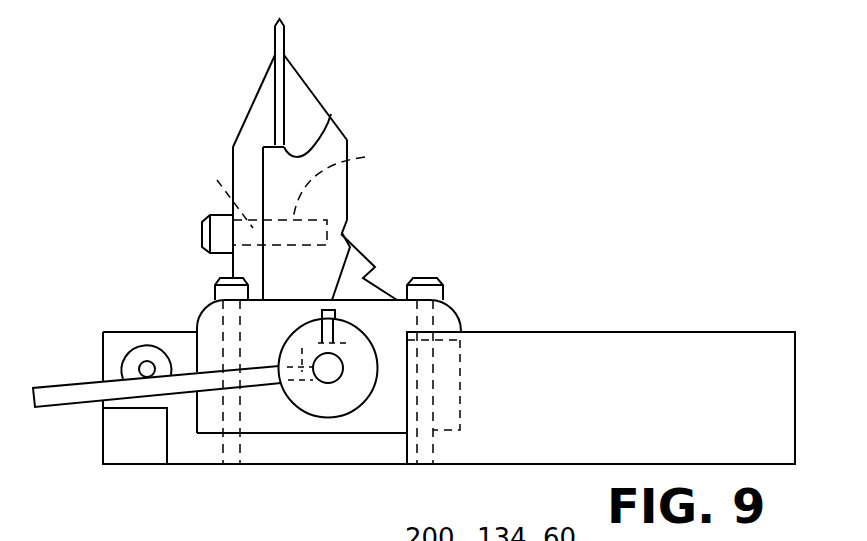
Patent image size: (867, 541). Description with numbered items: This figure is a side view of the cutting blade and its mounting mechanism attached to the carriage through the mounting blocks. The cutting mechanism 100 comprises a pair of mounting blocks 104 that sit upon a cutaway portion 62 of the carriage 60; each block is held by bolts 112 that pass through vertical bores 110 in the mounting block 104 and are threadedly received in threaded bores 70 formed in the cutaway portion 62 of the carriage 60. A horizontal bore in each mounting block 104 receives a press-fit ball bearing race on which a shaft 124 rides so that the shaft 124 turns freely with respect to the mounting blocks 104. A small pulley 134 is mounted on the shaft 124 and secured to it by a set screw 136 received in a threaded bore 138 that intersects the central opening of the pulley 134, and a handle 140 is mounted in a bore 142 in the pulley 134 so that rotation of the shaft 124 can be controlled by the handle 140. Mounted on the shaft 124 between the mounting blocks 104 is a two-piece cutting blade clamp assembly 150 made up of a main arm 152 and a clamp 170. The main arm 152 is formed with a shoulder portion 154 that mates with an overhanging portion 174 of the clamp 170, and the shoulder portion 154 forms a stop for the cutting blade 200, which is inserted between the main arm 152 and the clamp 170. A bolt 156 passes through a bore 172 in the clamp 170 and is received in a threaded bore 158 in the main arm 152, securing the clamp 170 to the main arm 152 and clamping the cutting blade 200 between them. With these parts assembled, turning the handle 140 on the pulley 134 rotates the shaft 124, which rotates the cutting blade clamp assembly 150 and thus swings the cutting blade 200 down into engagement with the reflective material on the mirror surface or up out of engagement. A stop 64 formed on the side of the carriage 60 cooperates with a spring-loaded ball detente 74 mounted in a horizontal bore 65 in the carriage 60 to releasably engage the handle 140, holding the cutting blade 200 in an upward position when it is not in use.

The carriage 60 is at (665, 331).
The cutaway portion 62 is at (290, 426).
The stop 64 is at (132, 448).
The horizontal bore 65 is at (130, 352).
The threaded bores 70 is at (233, 468).
The spring-loaded ball detente 74 is at (138, 372).
The cutting mechanism 100 is at (155, 257).
The mounting blocks 104 is at (457, 308).
The vertical bores 110 is at (222, 333).
The bolts 112 is at (215, 292).
The shaft 124 is at (405, 386).
The pulley 134 is at (368, 272).
The set screw 136 is at (342, 233).
The threaded bore 138 is at (335, 343).
The handle 140 is at (78, 407).
The bore 142 is at (298, 325).
The cutting blade clamp assembly 150 is at (306, 172).
The main arm 152 is at (313, 88).
The shoulder portion 154 is at (327, 115).
The bolt 156 is at (202, 230).
The threaded bore 158 is at (355, 181).
The clamp 170 is at (233, 163).
The bore 172 is at (215, 198).
The overhanging portion 174 is at (250, 109).
The cutting blade 200 is at (274, 42).